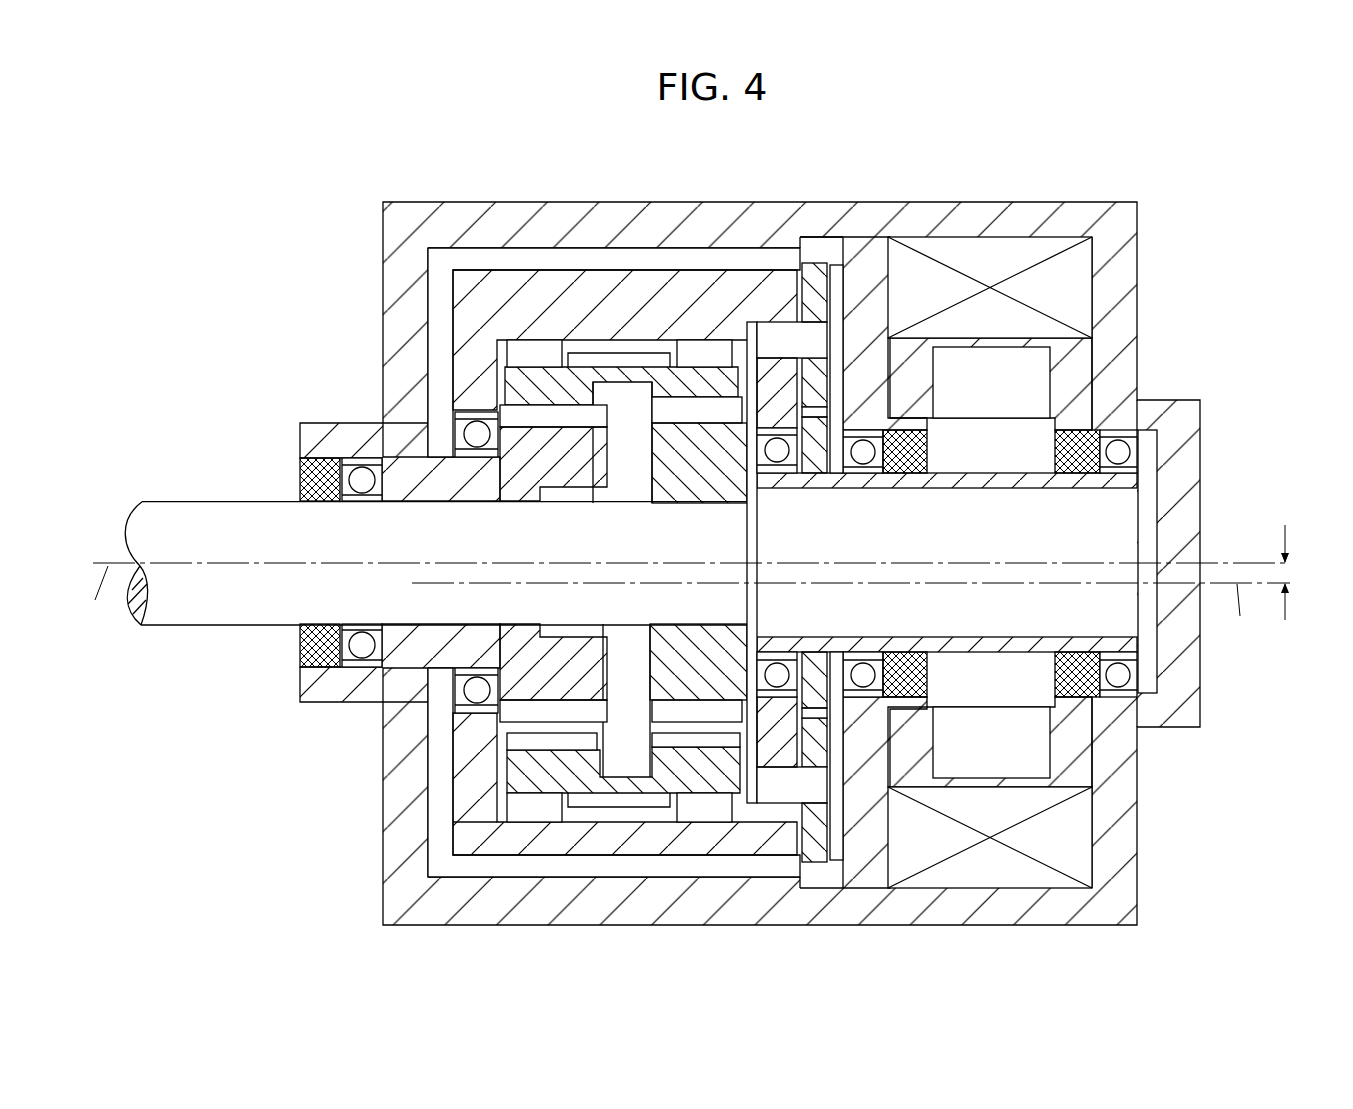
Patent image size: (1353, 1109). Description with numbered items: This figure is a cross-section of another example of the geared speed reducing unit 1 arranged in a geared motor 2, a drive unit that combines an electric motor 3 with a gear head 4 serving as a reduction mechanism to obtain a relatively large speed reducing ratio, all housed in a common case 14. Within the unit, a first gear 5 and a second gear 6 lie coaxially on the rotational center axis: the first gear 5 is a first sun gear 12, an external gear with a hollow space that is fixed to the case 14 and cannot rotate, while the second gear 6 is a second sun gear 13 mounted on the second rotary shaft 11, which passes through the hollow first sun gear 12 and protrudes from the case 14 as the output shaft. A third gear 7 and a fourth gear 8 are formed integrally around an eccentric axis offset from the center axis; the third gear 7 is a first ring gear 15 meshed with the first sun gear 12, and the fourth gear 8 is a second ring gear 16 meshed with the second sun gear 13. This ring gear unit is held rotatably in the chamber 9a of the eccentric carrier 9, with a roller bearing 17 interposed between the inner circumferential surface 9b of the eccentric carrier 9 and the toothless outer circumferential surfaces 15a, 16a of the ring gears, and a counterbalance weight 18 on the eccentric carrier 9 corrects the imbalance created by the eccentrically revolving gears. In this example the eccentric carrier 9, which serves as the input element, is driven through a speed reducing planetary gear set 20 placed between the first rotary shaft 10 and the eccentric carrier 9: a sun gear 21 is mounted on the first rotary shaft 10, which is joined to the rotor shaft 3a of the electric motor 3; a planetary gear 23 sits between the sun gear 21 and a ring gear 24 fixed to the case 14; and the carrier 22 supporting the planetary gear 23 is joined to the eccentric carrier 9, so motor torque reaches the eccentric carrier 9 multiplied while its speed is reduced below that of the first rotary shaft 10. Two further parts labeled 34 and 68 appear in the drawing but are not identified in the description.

The geared speed reducing unit 1 is at (268, 250).
The geared motor 2 is at (1024, 163).
The electric motor 3 is at (1066, 750).
The rotor shaft 3a is at (932, 640).
The gear head 4 is at (452, 792).
The first gear 5 is at (364, 562).
The first sun gear 12 is at (498, 467).
The second gear 6 is at (695, 561).
The second sun gear 13 is at (663, 440).
The third gear 7 is at (668, 570).
The first ring gear 15 is at (522, 374).
The fourth gear 8 is at (673, 570).
The second ring gear 16 is at (736, 374).
The eccentric carrier 9 is at (602, 300).
The chamber 9a is at (800, 805).
The inner circumferential surface 9b is at (617, 806).
The first rotary shaft 10 is at (780, 472).
The second rotary shaft 11 is at (207, 608).
The case 14 is at (690, 912).
The outer circumferential surface 15a is at (508, 827).
The outer circumferential surface 16a is at (743, 948).
The roller bearing 17 is at (530, 960).
The counterbalance weight 18 is at (468, 292).
The speed reducing planetary gear set 20 is at (797, 262).
The sun gear 21 is at (622, 580).
The carrier 22 is at (802, 963).
The planetary gear 23 is at (858, 300).
The ring gear 24 is at (836, 274).
The bearing support 34 is at (826, 514).
The gap 68 is at (822, 249).